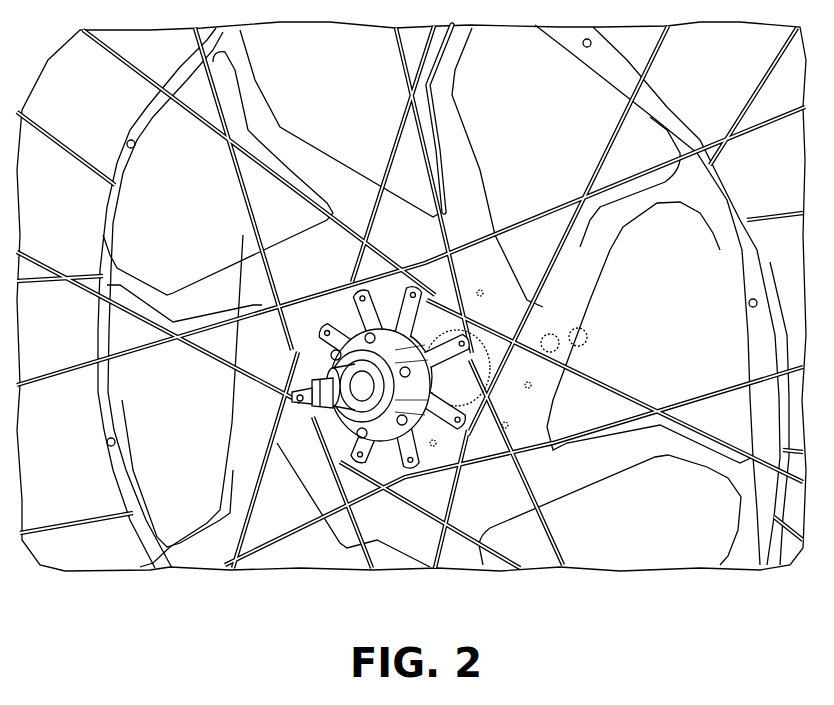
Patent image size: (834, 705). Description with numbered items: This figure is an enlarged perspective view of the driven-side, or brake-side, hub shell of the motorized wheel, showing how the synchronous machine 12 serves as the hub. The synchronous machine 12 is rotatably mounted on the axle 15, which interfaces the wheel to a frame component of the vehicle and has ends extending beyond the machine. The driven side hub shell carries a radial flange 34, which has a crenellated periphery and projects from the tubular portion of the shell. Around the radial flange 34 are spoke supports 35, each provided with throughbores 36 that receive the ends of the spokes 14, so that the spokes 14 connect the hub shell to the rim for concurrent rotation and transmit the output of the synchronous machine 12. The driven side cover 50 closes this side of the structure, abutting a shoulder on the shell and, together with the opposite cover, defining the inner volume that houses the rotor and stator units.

The synchronous machine 12 is at (120, 120).
The spokes 14 is at (280, 187).
The axle 15 is at (297, 398).
The radial flange 34 is at (392, 490).
The spoke supports 35 is at (303, 335).
The throughbores 36 is at (440, 468).
The driven side cover 50 is at (676, 329).